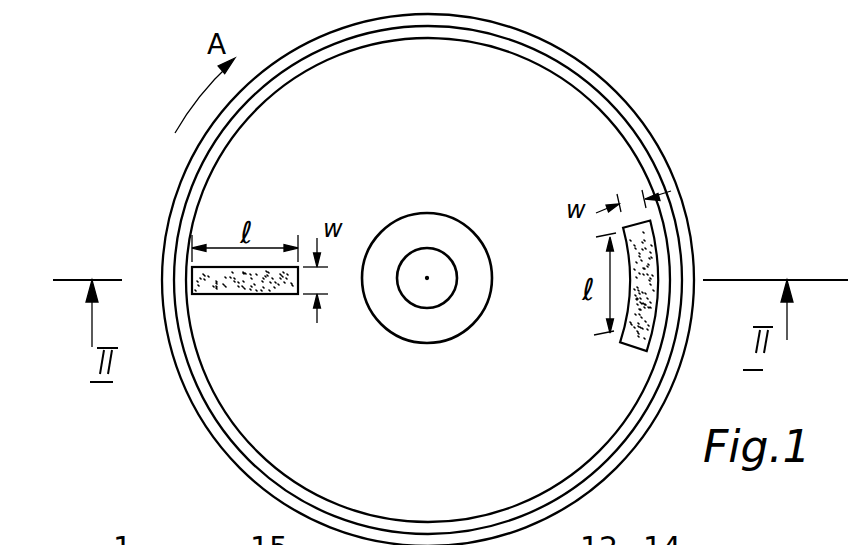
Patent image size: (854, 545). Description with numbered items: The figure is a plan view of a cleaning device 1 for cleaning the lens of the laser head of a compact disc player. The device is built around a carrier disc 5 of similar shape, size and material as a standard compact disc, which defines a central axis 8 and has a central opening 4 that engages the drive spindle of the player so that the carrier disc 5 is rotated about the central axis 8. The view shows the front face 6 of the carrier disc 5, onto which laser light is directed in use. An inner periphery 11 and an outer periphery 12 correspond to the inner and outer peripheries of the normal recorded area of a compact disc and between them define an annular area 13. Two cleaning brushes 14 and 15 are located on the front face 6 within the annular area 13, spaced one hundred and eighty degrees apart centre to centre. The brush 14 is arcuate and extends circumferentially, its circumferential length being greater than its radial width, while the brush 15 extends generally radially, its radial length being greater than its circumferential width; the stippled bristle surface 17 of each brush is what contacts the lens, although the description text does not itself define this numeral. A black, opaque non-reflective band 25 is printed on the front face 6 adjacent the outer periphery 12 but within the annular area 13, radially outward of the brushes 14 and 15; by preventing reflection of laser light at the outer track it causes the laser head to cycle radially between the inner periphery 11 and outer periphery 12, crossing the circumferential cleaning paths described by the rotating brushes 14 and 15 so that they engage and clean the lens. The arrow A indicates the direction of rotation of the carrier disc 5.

The cleaning device 1 is at (700, 95).
The opening 4 is at (447, 252).
The carrier disc 5 is at (615, 158).
The front face 6 is at (577, 448).
The central axis 8 is at (428, 277).
The inner periphery 11 is at (427, 212).
The outer periphery 12 is at (225, 440).
The annular area 13 is at (563, 108).
The cleaning brush 14 is at (637, 353).
The cleaning brush 15 is at (268, 287).
The coating 17 is at (220, 285).
The non-reflective band 25 is at (293, 63).